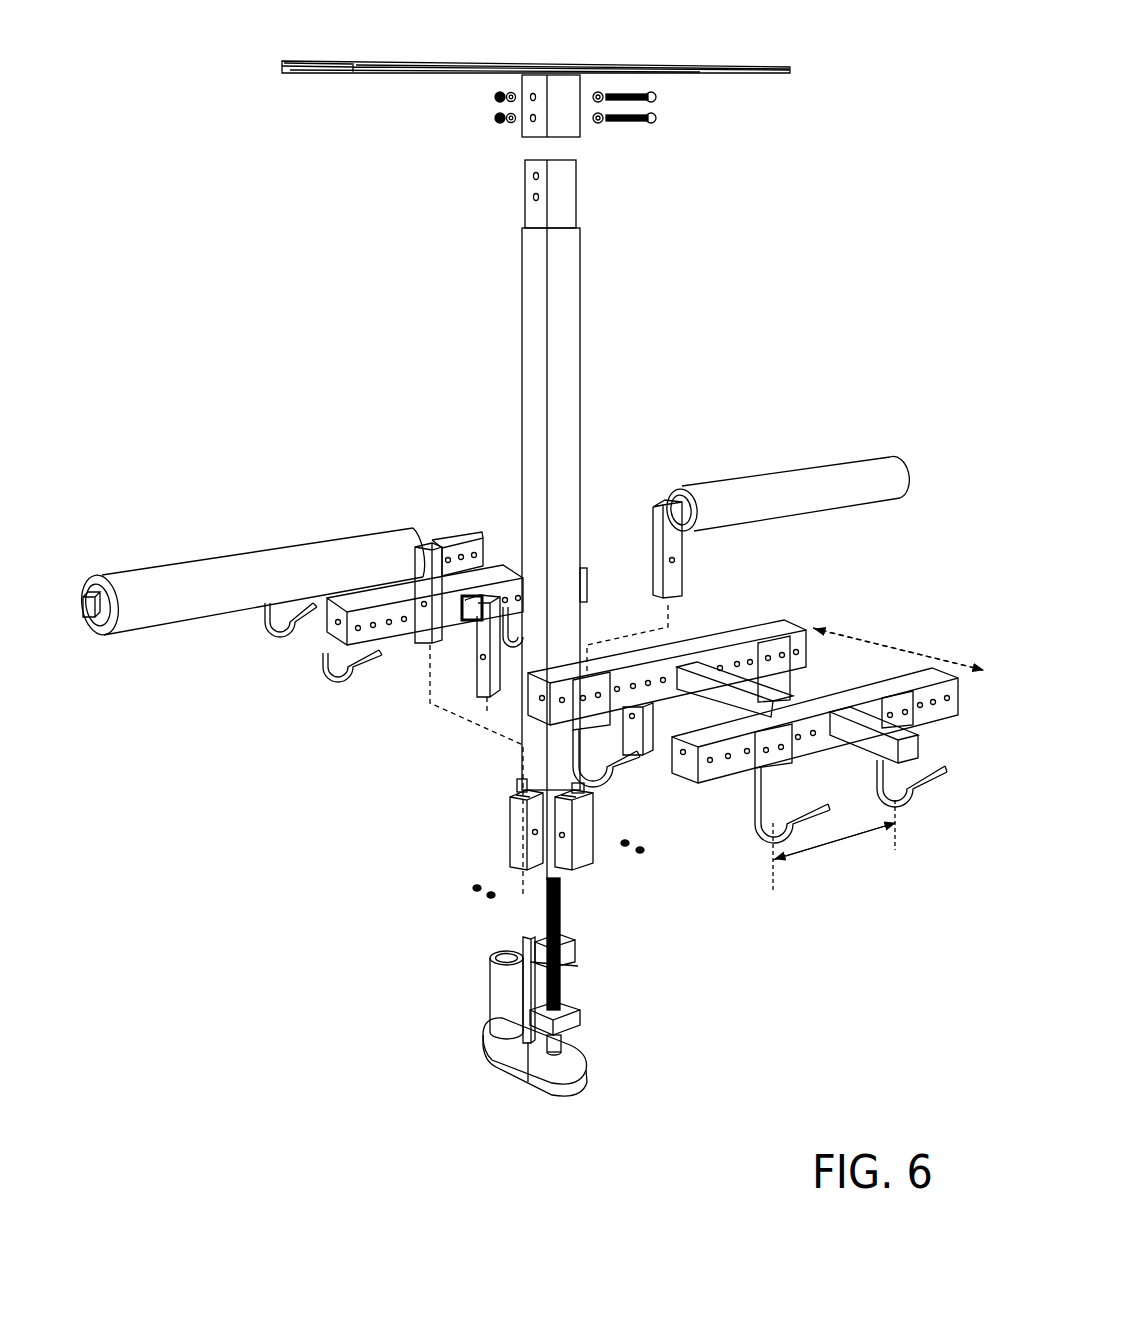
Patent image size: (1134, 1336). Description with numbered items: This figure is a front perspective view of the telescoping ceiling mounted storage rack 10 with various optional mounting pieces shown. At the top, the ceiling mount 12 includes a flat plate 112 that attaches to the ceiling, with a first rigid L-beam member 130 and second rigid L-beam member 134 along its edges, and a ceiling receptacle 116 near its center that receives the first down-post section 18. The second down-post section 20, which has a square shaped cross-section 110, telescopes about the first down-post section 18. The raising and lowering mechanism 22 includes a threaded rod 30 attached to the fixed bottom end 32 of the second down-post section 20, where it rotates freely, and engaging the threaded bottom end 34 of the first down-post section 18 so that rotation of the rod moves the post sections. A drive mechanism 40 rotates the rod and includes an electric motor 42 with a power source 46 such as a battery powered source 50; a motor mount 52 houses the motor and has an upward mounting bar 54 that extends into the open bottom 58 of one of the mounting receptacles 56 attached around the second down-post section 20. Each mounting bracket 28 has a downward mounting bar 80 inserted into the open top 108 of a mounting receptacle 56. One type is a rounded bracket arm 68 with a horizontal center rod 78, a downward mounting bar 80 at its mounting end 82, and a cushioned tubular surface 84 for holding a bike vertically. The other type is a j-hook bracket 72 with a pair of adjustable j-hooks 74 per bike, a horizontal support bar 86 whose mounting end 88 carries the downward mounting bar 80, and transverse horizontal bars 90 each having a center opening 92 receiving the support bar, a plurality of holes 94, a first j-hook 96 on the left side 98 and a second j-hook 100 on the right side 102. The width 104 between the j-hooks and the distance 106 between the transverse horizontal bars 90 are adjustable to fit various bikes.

The telescoping ceiling mounted storage rack 10 is at (345, 405).
The ceiling mount 12 is at (246, 60).
The first down-post section 18 is at (566, 185).
The second down-post section 20 is at (566, 300).
The raising and lowering mechanism 22 is at (467, 1025).
The mounting bracket 28 is at (525, 651).
The threaded rod 30 is at (561, 905).
The fixed bottom end 32 is at (580, 1020).
The threaded bottom end 34 is at (568, 952).
The drive mechanism 40 is at (496, 1025).
The electric motor 42 is at (494, 996).
The power source 46 is at (462, 1095).
The battery powered source 50 is at (452, 1072).
The motor mount 52 is at (549, 1076).
The upward mounting bar 54 is at (520, 963).
The mounting receptacle 56 is at (496, 784).
The open bottom 58 is at (496, 868).
The rounded bracket arm 68 is at (512, 496).
The j-hook bracket 72 is at (607, 670).
The adjustable j-hook 74 is at (602, 736).
The horizontal center rod 78 is at (85, 596).
The downward mounting bar 80 is at (428, 548).
The mounting end 82 is at (390, 503).
The tubular surface 84 is at (160, 572).
The horizontal support bar 86 is at (466, 612).
The mounting end 88 is at (508, 563).
The transverse horizontal bar 90 is at (486, 555).
The center opening 92 is at (462, 614).
The plurality of holes 94 is at (943, 741).
The first j-hook 96 is at (767, 838).
The left side 98 is at (745, 790).
The second j-hook 100 is at (922, 794).
The right side 102 is at (950, 763).
The width 104 is at (863, 837).
The distance 106 is at (870, 636).
The open top 108 is at (506, 787).
The square shaped cross-section 110 is at (495, 330).
The flat plate 112 is at (526, 62).
The ceiling receptacle 116 is at (567, 123).
The first rigid L-beam member 130 is at (292, 71).
The second rigid L-beam member 134 is at (372, 70).